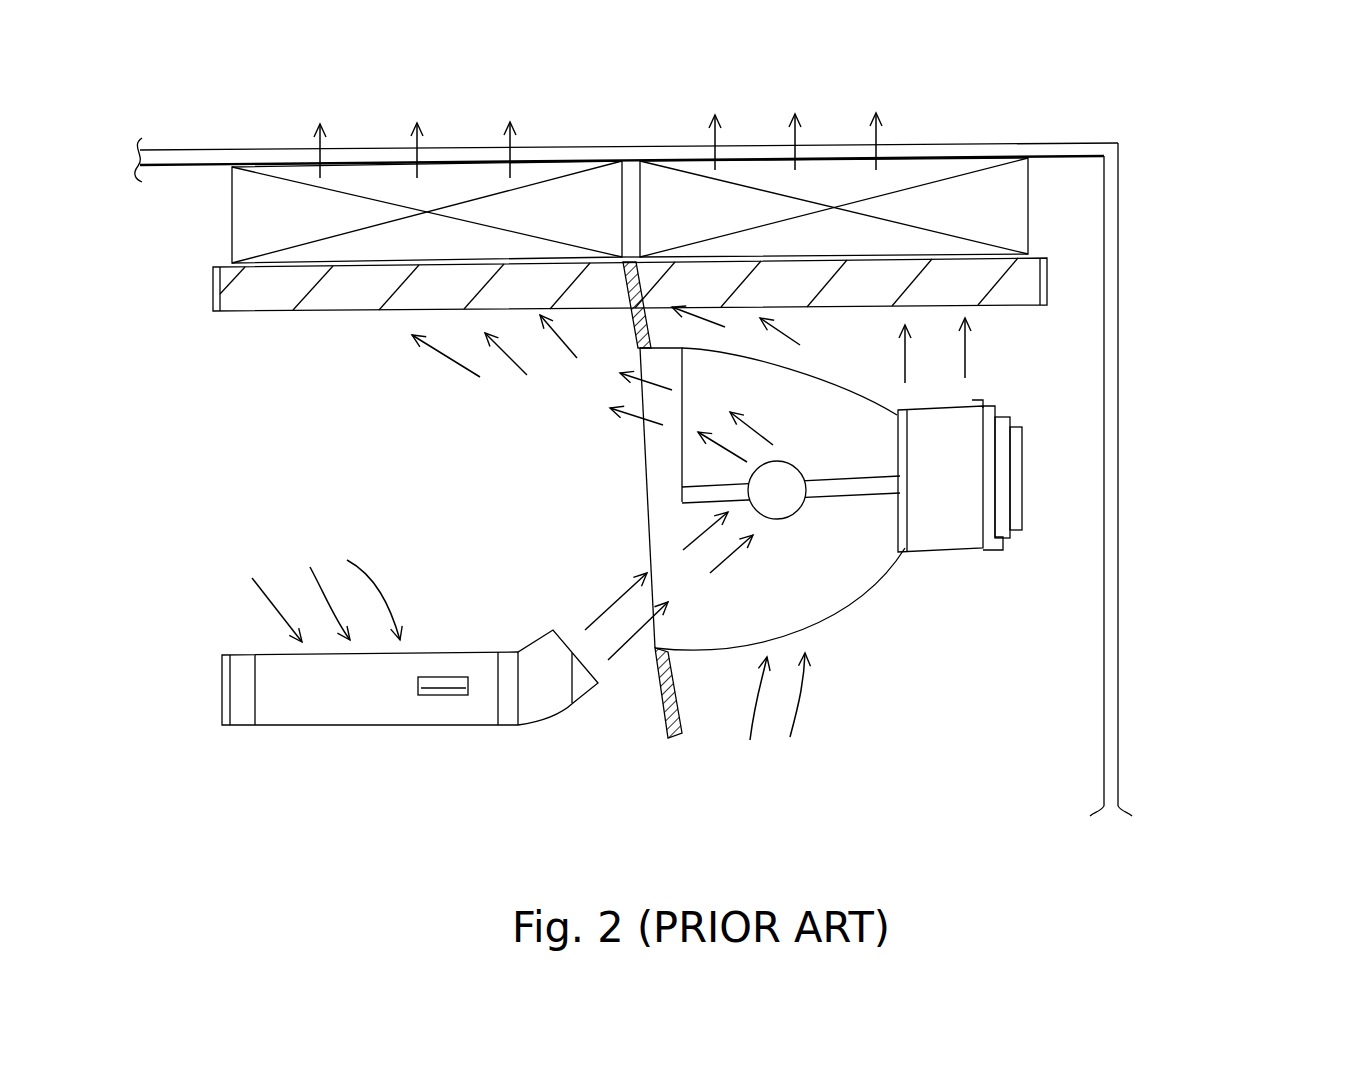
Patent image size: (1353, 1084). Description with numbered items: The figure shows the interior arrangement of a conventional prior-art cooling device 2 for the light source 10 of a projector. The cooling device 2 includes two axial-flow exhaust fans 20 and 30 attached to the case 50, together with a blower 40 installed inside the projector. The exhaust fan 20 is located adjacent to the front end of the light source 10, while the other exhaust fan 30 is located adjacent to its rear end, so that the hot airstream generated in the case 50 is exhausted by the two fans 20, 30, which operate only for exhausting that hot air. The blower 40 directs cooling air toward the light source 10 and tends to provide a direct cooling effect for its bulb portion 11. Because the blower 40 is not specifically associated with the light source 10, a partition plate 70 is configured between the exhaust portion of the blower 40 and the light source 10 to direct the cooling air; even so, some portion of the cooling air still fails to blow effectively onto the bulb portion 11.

The cooling device 2 is at (973, 491).
The light source 10 is at (987, 400).
The bulb portion 11 is at (798, 512).
The axial-flow exhaust fan 20 is at (278, 167).
The axial-flow exhaust fan 30 is at (938, 157).
The blower 40 is at (220, 660).
The case 50 is at (1110, 437).
The partition plate 70 is at (650, 688).